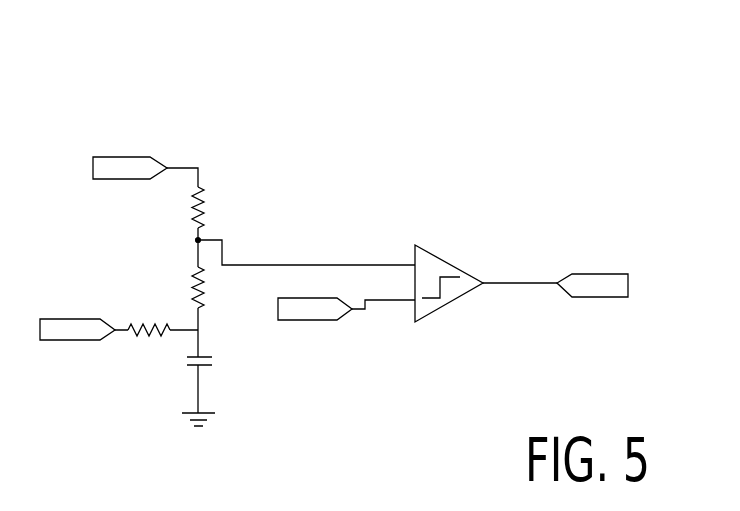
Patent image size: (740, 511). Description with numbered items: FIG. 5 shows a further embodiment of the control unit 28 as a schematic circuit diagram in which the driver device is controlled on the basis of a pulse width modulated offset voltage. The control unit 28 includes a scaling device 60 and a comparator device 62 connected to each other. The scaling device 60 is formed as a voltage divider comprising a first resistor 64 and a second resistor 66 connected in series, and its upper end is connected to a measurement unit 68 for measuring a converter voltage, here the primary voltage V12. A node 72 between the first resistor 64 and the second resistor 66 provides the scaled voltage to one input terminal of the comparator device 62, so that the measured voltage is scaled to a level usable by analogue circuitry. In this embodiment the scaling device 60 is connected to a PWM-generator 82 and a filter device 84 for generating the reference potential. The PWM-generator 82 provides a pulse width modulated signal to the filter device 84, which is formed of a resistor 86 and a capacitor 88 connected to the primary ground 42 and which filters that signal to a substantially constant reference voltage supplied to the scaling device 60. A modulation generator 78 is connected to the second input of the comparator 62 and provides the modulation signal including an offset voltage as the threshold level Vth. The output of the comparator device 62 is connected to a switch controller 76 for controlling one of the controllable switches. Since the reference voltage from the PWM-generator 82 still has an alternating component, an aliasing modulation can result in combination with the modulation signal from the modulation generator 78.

The scaling device 60 is at (224, 107).
The control unit 28 is at (497, 128).
The measurement unit 68 is at (122, 157).
The primary voltage V12 is at (187, 168).
The first resistor 64 is at (202, 217).
The node 72 is at (197, 241).
The second resistor 66 is at (192, 286).
The PWM-generator 82 is at (50, 342).
The resistor 86 is at (150, 333).
The capacitor 88 is at (187, 366).
The primary ground level 42 is at (185, 415).
The filter device 84 is at (227, 383).
The modulation generator 78 is at (312, 320).
The threshold level Vth is at (393, 302).
The comparator device 62 is at (462, 270).
The switch controller 76 is at (603, 274).